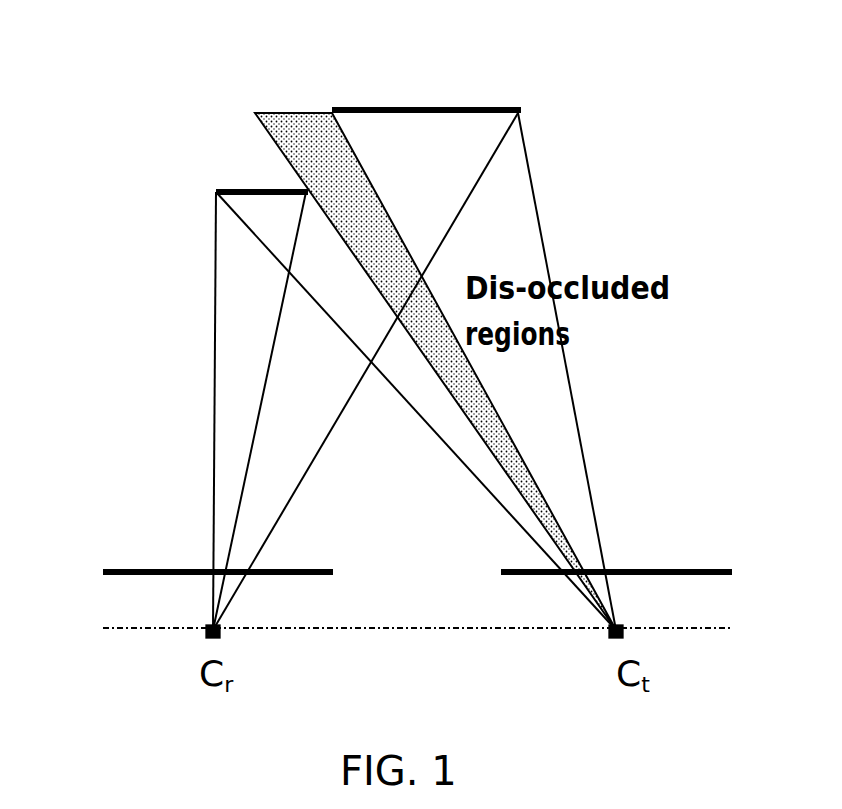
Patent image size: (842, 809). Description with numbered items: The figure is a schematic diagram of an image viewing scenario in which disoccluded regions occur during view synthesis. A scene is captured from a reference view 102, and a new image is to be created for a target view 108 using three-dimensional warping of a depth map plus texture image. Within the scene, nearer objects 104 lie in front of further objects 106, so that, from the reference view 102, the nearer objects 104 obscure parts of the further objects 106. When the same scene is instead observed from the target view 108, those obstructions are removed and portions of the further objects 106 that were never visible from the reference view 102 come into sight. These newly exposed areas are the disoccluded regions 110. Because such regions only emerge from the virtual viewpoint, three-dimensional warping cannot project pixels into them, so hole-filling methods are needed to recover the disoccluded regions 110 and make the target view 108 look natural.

The reference view 102 is at (103, 566).
The nearer objects 104 is at (291, 189).
The further objects 106 is at (440, 108).
The target view 108 is at (720, 566).
The disoccluded regions 110 is at (276, 113).